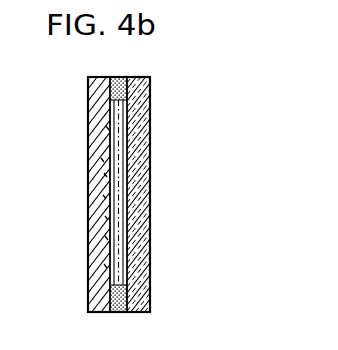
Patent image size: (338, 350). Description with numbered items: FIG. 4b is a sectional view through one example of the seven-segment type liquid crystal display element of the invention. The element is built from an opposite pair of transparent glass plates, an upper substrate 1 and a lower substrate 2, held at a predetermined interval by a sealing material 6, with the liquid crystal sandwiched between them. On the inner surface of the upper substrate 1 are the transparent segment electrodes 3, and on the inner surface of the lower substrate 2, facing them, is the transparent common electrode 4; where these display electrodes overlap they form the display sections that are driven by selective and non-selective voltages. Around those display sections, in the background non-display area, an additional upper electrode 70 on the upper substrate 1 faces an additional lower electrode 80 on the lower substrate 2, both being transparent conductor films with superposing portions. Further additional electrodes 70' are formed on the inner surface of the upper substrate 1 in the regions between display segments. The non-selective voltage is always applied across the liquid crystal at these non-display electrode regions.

The upper substrate 1 is at (88, 110).
The lower substrate 2 is at (149, 111).
The segment electrodes 3 is at (103, 160).
The common electrode 4 is at (125, 189).
The sealing material 6 is at (121, 312).
The additional upper electrode 70 is at (78, 225).
The additional electrodes 70' is at (77, 219).
The additional lower electrode 80 is at (127, 128).